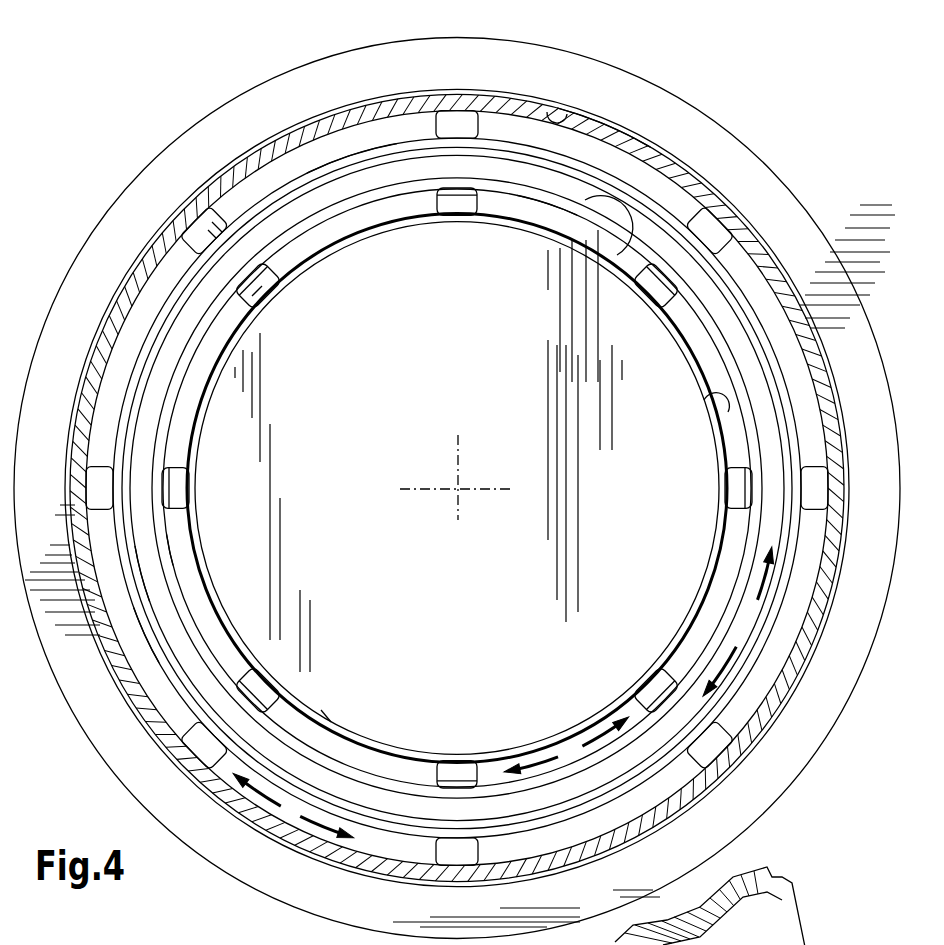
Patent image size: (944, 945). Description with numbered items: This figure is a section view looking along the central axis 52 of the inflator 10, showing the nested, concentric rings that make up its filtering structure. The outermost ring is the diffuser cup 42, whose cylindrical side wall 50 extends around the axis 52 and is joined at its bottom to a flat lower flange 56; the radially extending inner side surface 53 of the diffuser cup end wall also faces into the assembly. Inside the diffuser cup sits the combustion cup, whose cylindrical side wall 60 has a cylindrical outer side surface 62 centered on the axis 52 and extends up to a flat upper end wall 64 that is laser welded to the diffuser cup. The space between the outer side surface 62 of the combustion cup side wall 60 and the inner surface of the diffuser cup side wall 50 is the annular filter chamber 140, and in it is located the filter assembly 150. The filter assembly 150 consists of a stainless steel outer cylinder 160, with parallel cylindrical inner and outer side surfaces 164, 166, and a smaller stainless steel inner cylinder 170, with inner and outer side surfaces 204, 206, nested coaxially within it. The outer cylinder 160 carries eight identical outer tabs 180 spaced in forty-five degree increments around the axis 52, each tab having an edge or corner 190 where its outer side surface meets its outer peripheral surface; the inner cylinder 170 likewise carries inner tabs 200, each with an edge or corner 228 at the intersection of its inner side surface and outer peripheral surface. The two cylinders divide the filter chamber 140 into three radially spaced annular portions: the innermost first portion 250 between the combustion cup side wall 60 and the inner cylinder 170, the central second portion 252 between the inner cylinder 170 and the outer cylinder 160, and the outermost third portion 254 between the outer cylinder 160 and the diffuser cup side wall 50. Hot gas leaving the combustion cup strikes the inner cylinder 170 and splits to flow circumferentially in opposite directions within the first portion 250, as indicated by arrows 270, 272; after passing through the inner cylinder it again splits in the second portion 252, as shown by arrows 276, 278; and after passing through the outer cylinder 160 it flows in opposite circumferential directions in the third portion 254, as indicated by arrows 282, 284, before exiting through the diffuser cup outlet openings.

The inflator 10 is at (224, 78).
The diffuser cup 42 is at (652, 150).
The cylindrical side wall 50 is at (612, 126).
The central axis 52 is at (457, 488).
The inner side surface 53 is at (555, 115).
The lower flange 56 is at (695, 165).
The cylindrical side wall 60 is at (707, 358).
The outer side surface 62 is at (710, 400).
The upper end wall 64 is at (428, 451).
The filter chamber 140 is at (328, 712).
The filter assembly 150 is at (513, 128).
The outer cylinder 160 is at (150, 322).
The inner side surface 164 is at (332, 172).
The outer side surface 166 is at (348, 135).
The inner cylinder 170 is at (173, 360).
The outer tabs 180 is at (460, 118).
The edge or corner 190 is at (218, 214).
The inner tabs 200 is at (453, 205).
The inner side surface 204 is at (540, 200).
The outer side surface 206 is at (593, 257).
The edge or corner 228 is at (242, 307).
The first portion of the filter chamber 250 is at (180, 540).
The second portion of the filter chamber 252 is at (148, 573).
The third portion of the filter chamber 254 is at (130, 632).
The arrow 270 is at (543, 764).
The arrow 272 is at (583, 742).
The arrow 276 is at (732, 652).
The arrow 278 is at (753, 577).
The arrow 282 is at (273, 805).
The arrow 284 is at (313, 823).